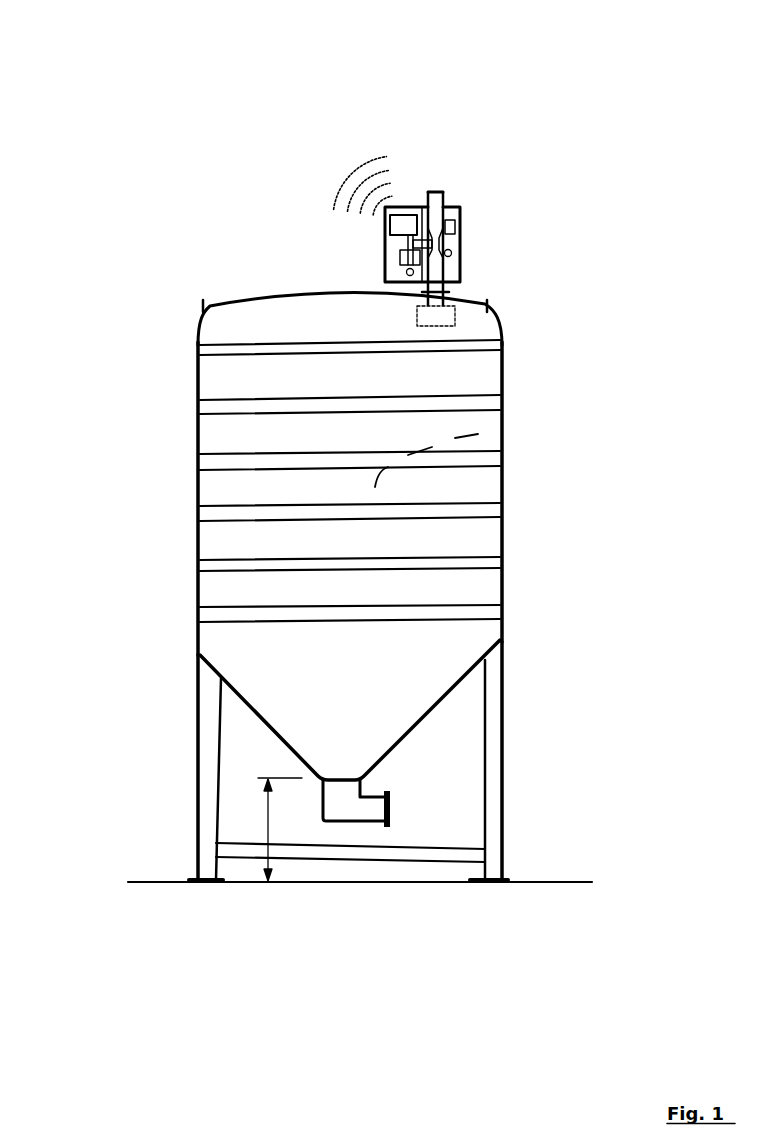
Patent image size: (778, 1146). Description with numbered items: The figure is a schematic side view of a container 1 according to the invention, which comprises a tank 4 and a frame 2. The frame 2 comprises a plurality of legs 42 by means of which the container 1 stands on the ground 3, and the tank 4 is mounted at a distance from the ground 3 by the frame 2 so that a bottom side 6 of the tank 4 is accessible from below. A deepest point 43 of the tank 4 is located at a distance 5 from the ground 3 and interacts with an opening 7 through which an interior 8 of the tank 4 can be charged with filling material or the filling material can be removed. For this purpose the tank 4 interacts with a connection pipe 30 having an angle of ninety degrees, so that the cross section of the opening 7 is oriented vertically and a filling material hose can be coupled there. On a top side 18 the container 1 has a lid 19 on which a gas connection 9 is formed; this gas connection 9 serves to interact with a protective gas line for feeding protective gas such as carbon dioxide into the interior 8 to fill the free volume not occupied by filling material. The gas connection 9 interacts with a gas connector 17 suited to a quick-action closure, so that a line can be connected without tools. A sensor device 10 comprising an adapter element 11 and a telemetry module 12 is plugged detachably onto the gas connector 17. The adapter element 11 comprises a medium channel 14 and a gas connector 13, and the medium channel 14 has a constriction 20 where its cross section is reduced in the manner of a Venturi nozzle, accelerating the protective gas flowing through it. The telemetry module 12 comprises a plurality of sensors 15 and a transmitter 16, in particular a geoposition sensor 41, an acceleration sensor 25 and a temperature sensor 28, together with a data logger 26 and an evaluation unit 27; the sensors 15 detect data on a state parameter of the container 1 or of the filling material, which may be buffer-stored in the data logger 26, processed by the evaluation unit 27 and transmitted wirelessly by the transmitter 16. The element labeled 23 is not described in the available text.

The container 1 is at (182, 255).
The frame 2 is at (197, 737).
The ground 3 is at (143, 882).
The tank 4 is at (195, 432).
The distance 5 is at (267, 822).
The bottom side 6 is at (417, 728).
The opening 7 is at (392, 800).
The interior 8 is at (503, 432).
The gas connection 9 is at (525, 259).
The sensor device 10 is at (495, 187).
The adapter element 11 is at (495, 187).
The telemetry module 12 is at (475, 203).
The gas connector 13 is at (447, 193).
The medium channel 14 is at (513, 236).
The sensors 15 is at (452, 229).
The transmitter 16 is at (361, 161).
The gas connector 17 is at (445, 298).
The top side 18 is at (347, 241).
The lid 19 is at (253, 300).
The constriction 20 is at (437, 245).
The control unit 23 is at (422, 208).
The acceleration sensor 25 is at (418, 258).
The data logger 26 is at (361, 161).
The evaluation unit 27 is at (393, 208).
The temperature sensor 28 is at (450, 233).
The connection pipe 30 is at (347, 813).
The geoposition sensor 41 is at (405, 272).
The legs 42 is at (205, 803).
The deepest point 43 is at (343, 782).